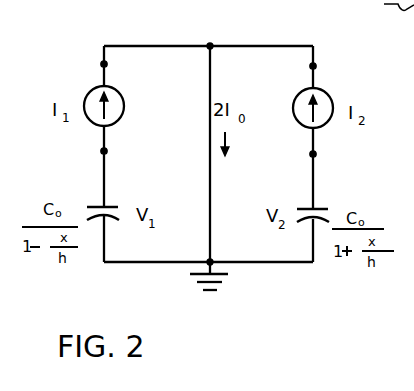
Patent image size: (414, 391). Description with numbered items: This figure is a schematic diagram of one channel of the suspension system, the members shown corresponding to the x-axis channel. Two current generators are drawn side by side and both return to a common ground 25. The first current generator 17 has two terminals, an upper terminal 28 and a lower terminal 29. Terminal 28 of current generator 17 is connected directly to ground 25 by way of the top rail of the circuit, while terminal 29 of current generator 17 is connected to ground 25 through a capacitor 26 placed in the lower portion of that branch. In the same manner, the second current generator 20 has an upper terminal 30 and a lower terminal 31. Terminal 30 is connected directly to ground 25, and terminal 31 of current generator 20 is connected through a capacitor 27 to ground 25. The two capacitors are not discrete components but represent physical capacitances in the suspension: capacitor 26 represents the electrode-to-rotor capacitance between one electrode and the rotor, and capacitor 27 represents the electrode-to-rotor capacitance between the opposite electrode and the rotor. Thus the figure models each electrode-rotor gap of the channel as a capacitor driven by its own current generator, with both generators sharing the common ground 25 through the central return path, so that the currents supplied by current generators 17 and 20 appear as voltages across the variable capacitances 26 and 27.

The current generator 17 is at (120, 98).
The current generator 20 is at (296, 101).
The ground 25 is at (211, 291).
The capacitor 26 is at (107, 206).
The capacitor 27 is at (300, 207).
The terminal 28 is at (107, 63).
The terminal 29 is at (107, 148).
The terminal 30 is at (316, 65).
The terminal 31 is at (311, 154).